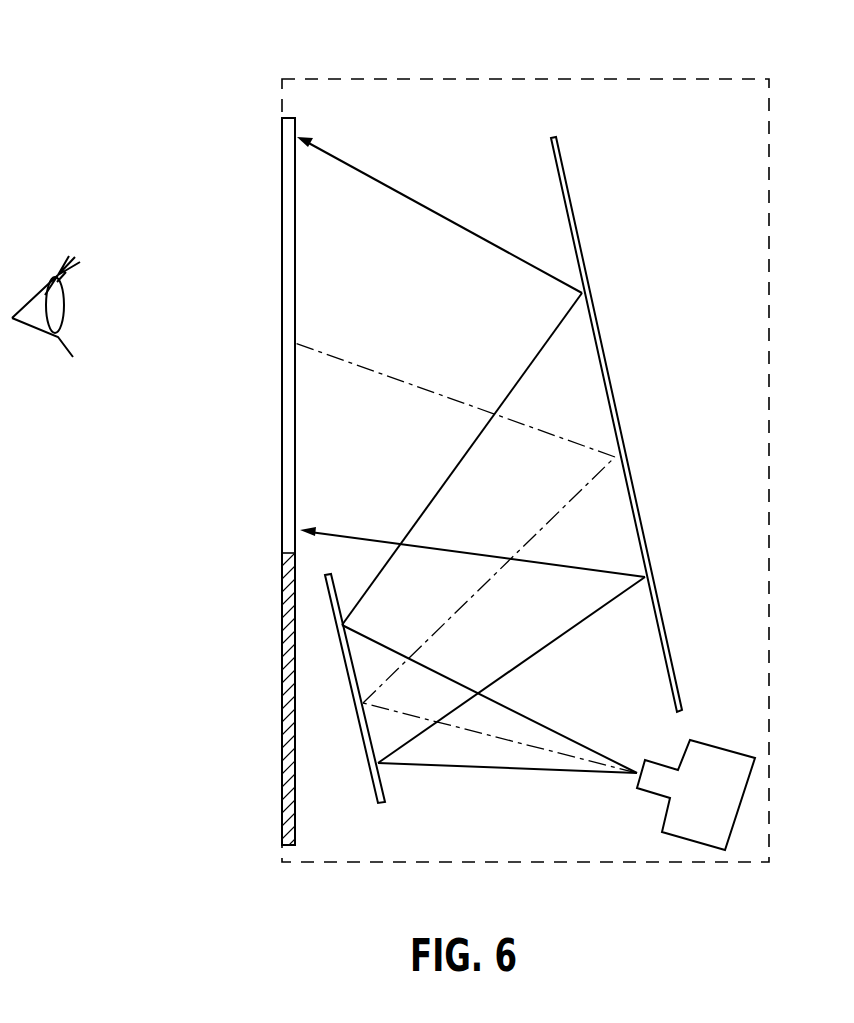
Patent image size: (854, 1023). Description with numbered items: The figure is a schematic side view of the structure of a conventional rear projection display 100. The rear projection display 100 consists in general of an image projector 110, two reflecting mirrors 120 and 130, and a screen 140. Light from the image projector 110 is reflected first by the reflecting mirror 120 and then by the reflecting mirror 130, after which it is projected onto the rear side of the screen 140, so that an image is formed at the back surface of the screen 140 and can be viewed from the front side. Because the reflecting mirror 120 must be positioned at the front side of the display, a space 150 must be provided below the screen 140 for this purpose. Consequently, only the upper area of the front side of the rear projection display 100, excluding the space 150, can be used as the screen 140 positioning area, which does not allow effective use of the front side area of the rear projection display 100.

The rear projection display 100 is at (516, 33).
The image projector 110 is at (663, 813).
The reflecting mirror 120 is at (383, 782).
The reflecting mirror 130 is at (580, 236).
The screen 140 is at (282, 157).
The space 150 is at (250, 553).